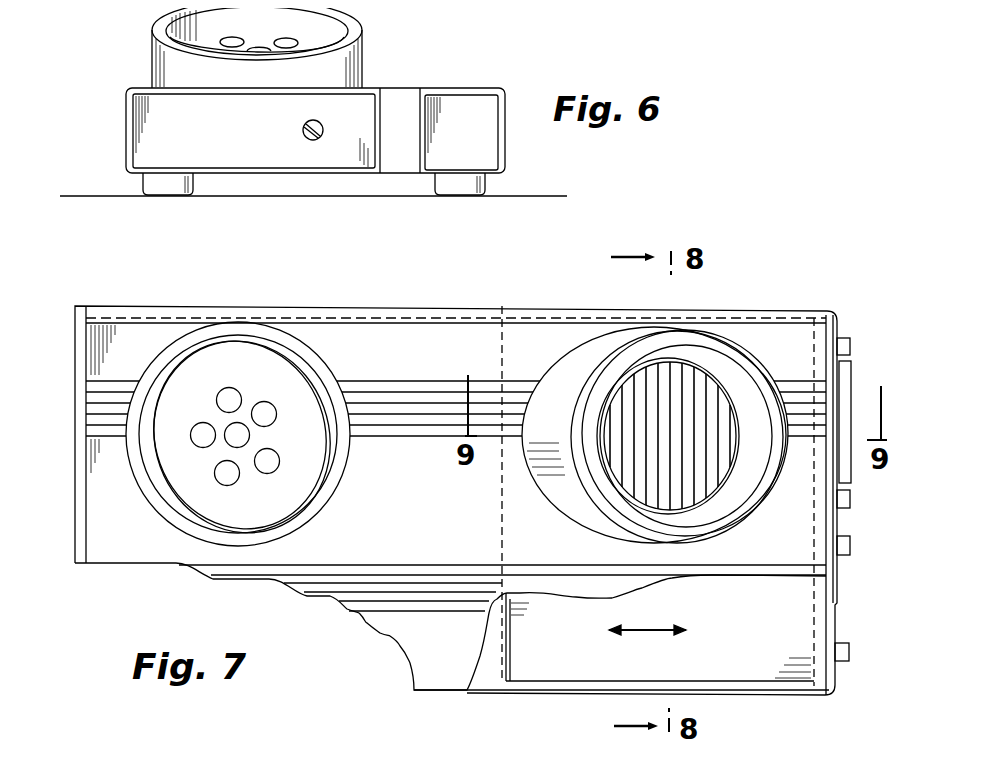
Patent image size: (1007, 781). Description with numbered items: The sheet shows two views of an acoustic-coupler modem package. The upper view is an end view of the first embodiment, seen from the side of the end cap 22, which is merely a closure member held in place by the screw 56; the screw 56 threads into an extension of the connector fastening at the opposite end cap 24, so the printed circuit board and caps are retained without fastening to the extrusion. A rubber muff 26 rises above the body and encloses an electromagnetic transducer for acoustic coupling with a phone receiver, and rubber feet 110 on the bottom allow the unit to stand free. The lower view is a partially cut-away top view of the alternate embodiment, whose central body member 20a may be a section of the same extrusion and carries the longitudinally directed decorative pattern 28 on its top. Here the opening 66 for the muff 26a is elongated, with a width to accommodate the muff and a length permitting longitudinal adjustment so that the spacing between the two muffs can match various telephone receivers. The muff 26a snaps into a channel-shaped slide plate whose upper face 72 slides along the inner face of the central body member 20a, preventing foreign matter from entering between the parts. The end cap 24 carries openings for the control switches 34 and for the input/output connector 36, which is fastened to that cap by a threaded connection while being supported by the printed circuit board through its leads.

In FIG. 6, the end cap 22 is at (140, 112).
In FIG. 7, the end cap 22 is at (82, 330).
In FIG. 7, the end cap 24 is at (833, 320).
In FIG. 6, the rubber muff 26 is at (362, 52).
In FIG. 7, the rubber muff 26 is at (288, 340).
In FIG. 7, the muff 26a is at (741, 338).
In FIG. 7, the decorative pattern 28 is at (422, 400).
In FIG. 7, the control switch 34 is at (851, 541).
In FIG. 7, the connector 36 is at (850, 375).
In FIG. 6, the screw 56 is at (313, 138).
In FIG. 7, the opening 66 is at (574, 338).
In FIG. 7, the upper face 72 is at (587, 346).
In FIG. 6, the rubber feet 110 is at (165, 190).
In FIG. 7, the central body member 20a is at (448, 308).